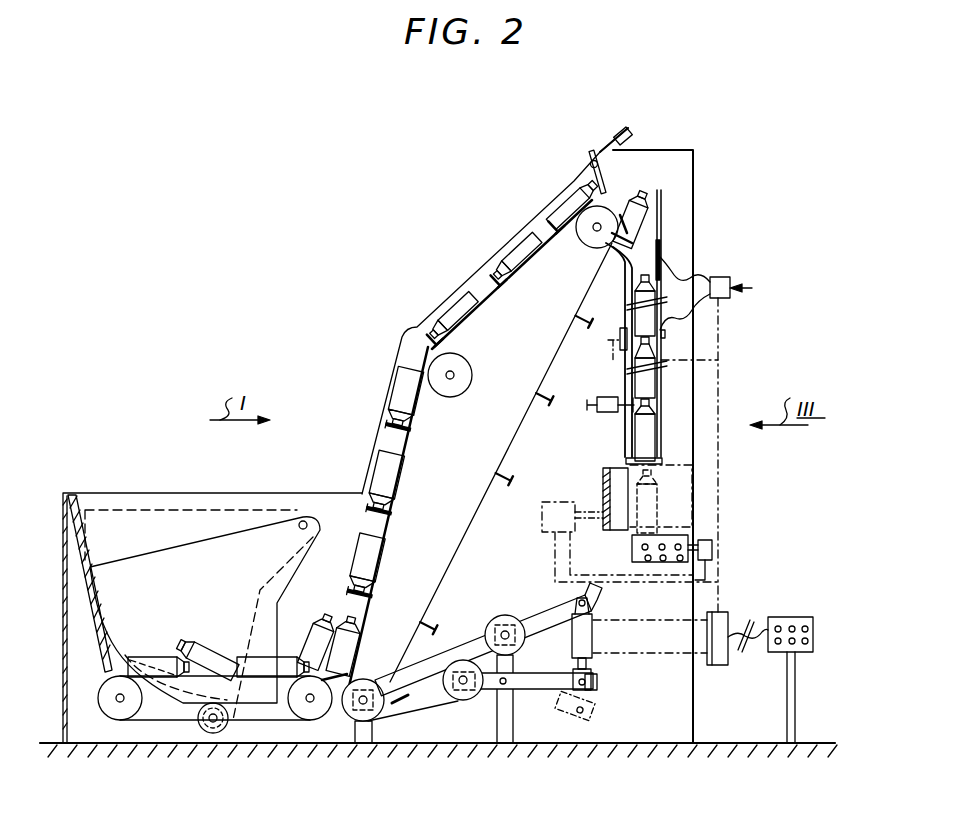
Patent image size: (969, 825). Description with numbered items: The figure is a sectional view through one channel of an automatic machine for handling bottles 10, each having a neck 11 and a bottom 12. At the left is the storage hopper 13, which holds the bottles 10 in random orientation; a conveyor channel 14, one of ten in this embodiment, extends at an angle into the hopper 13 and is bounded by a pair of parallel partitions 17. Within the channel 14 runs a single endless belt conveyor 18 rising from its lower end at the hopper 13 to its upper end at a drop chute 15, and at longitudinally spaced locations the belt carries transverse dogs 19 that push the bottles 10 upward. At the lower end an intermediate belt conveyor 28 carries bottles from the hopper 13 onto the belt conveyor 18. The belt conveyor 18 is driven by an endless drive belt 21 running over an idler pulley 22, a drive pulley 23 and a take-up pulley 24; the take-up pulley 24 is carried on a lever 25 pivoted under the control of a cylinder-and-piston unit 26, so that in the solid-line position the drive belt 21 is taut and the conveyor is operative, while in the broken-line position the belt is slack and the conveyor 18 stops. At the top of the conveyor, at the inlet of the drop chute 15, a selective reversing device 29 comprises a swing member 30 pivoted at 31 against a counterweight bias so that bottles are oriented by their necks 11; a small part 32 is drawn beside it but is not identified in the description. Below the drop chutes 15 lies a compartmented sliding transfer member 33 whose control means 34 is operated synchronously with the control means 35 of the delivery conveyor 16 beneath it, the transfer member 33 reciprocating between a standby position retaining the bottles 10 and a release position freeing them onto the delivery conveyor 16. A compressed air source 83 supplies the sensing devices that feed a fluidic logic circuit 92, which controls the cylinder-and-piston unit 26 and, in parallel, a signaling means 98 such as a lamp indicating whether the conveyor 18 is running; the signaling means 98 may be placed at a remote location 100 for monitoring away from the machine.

The bottles 10 is at (255, 650).
The necks 11 is at (619, 186).
The bottoms 12 is at (521, 243).
The storage hopper 13 is at (168, 490).
The conveyor channels 14 is at (388, 436).
The drop chutes 15 is at (641, 249).
The delivery conveyor 16 is at (672, 525).
The partitions 17 is at (672, 174).
The endless belt conveyor 18 is at (424, 327).
The transverse dogs 19 is at (428, 343).
The endless drive belt 21 is at (419, 716).
The idler pulley 22 is at (350, 712).
The drive pulley 23 is at (500, 620).
The take-up pulley 24 is at (465, 698).
The lever 25 is at (548, 686).
The cylinder-and-piston unit 26 is at (598, 658).
The intermediate belt conveyor 28 is at (183, 722).
The selective reversing device 29 is at (628, 118).
The swing member 30 is at (592, 170).
The pivot 31 is at (592, 158).
The end stop 32 is at (632, 134).
The compartmented sliding transfer member 33 is at (602, 470).
The control means 34 is at (540, 526).
The control means 35 is at (710, 542).
The compressed air source 83 is at (733, 434).
The fluidic logic circuit 92 is at (715, 665).
The signaling means 98 is at (805, 626).
The remote location 100 is at (765, 616).